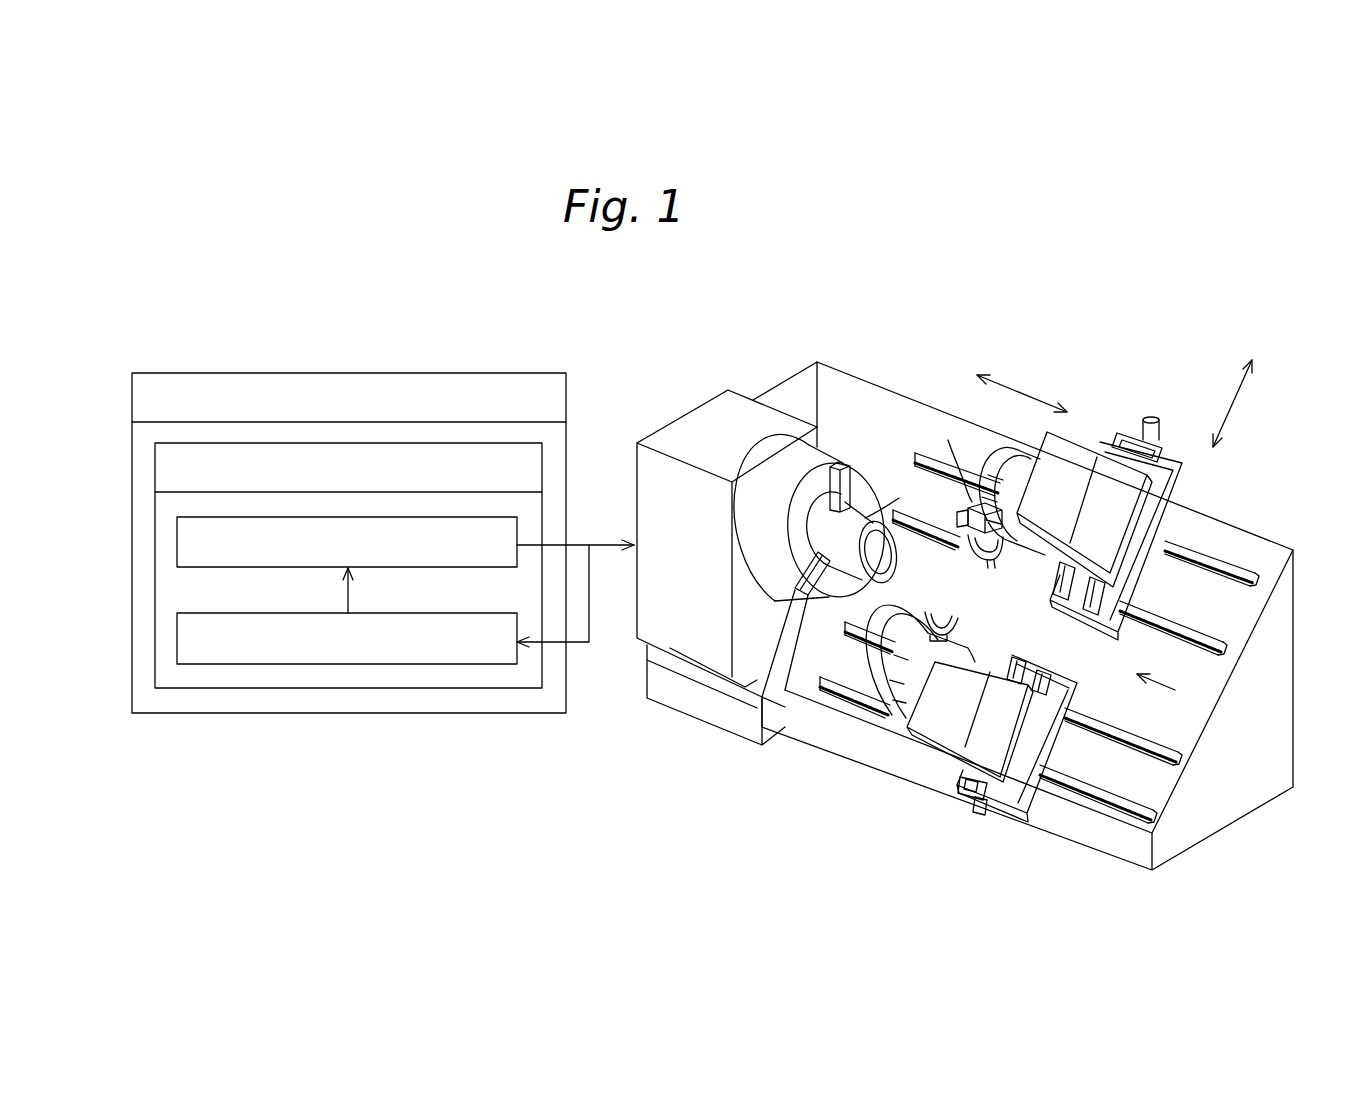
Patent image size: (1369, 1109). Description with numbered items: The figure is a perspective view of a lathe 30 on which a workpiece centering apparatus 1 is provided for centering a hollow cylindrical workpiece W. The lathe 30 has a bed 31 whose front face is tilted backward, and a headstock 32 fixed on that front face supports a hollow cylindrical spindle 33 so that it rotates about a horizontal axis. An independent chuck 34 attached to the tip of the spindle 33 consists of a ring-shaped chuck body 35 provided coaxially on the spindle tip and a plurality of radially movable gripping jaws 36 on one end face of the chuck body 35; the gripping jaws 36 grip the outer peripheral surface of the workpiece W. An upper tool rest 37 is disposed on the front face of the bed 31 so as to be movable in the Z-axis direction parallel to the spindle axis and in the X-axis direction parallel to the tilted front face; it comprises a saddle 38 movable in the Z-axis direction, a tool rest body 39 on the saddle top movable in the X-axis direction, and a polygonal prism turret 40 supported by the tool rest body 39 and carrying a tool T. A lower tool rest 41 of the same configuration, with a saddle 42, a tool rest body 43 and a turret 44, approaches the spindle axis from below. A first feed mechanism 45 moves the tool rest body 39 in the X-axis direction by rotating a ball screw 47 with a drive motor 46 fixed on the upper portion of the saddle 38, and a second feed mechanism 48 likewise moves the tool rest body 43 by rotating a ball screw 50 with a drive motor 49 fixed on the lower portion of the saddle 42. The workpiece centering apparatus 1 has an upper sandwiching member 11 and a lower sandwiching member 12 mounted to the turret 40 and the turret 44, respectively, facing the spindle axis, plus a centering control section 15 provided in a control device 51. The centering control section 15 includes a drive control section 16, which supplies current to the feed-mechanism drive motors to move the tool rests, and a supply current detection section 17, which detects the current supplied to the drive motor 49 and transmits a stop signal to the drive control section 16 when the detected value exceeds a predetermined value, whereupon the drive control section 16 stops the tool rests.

The workpiece centering apparatus 1 is at (975, 588).
The upper sandwiching member 11 is at (995, 570).
The lower sandwiching member 12 is at (948, 620).
The centering control section 15 is at (328, 553).
The drive control section 16 is at (177, 538).
The supply current detection section 17 is at (177, 637).
The lathe 30 is at (813, 327).
The bed 31 is at (1205, 822).
The headstock 32 is at (692, 420).
The spindle 33 is at (833, 461).
The independent chuck 34 is at (879, 458).
The chuck body 35 is at (827, 460).
The gripping jaws 36 is at (865, 463).
The upper tool rest 37 is at (1143, 464).
The saddle 38 is at (1160, 515).
The tool rest body 39 is at (1070, 450).
The turret 40 is at (1007, 467).
The lower tool rest 41 is at (920, 751).
The saddle 42 is at (1028, 807).
The tool rest body 43 is at (942, 745).
The turret 44 is at (902, 698).
The first feed mechanism 45 is at (1147, 375).
The drive motor 46 is at (1153, 417).
The ball screw 47 is at (1132, 437).
The second feed mechanism 48 is at (922, 837).
The drive motor 49 is at (970, 810).
The ball screw 50 is at (995, 810).
The control device 51 is at (328, 498).